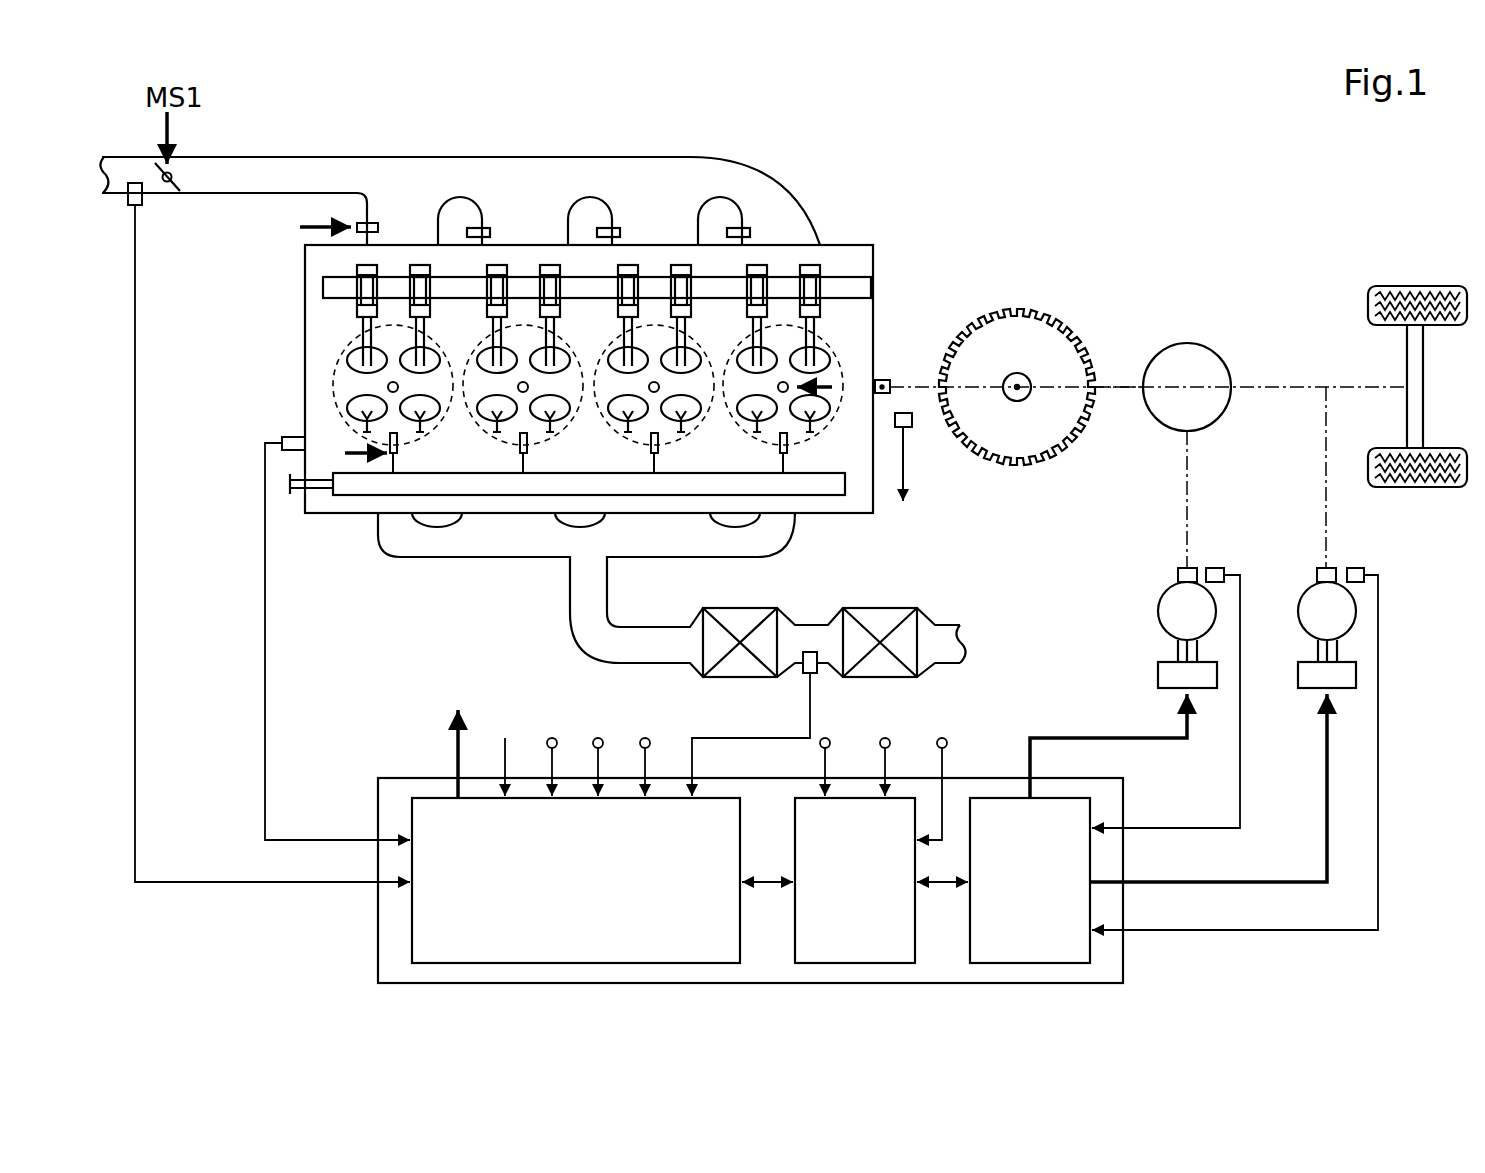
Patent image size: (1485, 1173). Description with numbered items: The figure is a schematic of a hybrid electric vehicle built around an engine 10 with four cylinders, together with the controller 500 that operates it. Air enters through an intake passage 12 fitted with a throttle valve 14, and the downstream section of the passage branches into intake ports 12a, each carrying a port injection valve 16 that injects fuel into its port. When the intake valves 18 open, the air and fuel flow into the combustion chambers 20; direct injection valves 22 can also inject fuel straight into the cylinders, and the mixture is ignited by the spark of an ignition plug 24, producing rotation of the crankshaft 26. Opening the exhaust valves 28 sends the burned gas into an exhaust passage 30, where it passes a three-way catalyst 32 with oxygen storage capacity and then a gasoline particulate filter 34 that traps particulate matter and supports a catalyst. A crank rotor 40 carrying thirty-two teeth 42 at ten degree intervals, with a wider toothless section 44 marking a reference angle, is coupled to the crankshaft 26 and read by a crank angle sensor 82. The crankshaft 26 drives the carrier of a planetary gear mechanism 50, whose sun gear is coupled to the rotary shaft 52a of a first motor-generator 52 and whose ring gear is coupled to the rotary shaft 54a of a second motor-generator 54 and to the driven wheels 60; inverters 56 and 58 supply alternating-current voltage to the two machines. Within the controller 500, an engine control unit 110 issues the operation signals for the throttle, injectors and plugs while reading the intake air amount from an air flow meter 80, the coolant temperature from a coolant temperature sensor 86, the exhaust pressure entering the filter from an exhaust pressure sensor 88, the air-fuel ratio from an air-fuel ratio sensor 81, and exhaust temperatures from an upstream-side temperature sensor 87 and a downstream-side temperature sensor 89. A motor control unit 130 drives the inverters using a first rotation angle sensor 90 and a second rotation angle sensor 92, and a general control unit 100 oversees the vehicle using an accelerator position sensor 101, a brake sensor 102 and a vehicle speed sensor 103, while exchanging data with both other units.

The engine 10 is at (884, 222).
The intake passage 12 is at (130, 157).
The intake port 12a is at (806, 222).
The throttle valve 14 is at (172, 175).
The port injection valve 16 is at (720, 222).
The intake valve 18 is at (362, 326).
The combustion chamber 20 is at (333, 387).
The direct injection valve 22 is at (398, 450).
The ignition plug 24 is at (400, 386).
The crankshaft 26 is at (888, 377).
The exhaust valve 28 is at (432, 430).
The exhaust passage 30 is at (663, 557).
The three-way catalyst 32 is at (740, 610).
The gasoline particulate filter 34 is at (880, 610).
The crank rotor 40 is at (1045, 352).
The teeth 42 is at (1073, 331).
The toothless section 44 is at (1088, 355).
The planetary gear mechanism 50 is at (1219, 357).
The first motor-generator 52 is at (1158, 611).
The rotary shaft of first motor-generator 52a is at (1178, 572).
The second motor-generator 54 is at (1299, 606).
The rotary shaft of second motor-generator 54a is at (1320, 568).
The inverter 56 is at (1158, 675).
The inverter 58 is at (1298, 680).
The driven wheels 60 is at (1463, 487).
The air flow meter 80 is at (145, 198).
The air-fuel ratio sensor 81 is at (556, 739).
The crank angle sensor 82 is at (912, 427).
The coolant temperature sensor 86 is at (282, 437).
The upstream-side temperature sensor 87 is at (602, 739).
The exhaust pressure sensor 88 is at (817, 672).
The downstream-side temperature sensor 89 is at (649, 739).
The first rotation angle sensor 90 is at (1215, 568).
The second rotation angle sensor 92 is at (1355, 568).
The general control unit 100 is at (850, 797).
The accelerator position sensor 101 is at (821, 746).
The brake sensor 102 is at (888, 739).
The vehicle speed sensor 103 is at (945, 739).
The engine control unit 110 is at (418, 797).
The motor control unit 130 is at (980, 797).
The controller 500 is at (1075, 778).